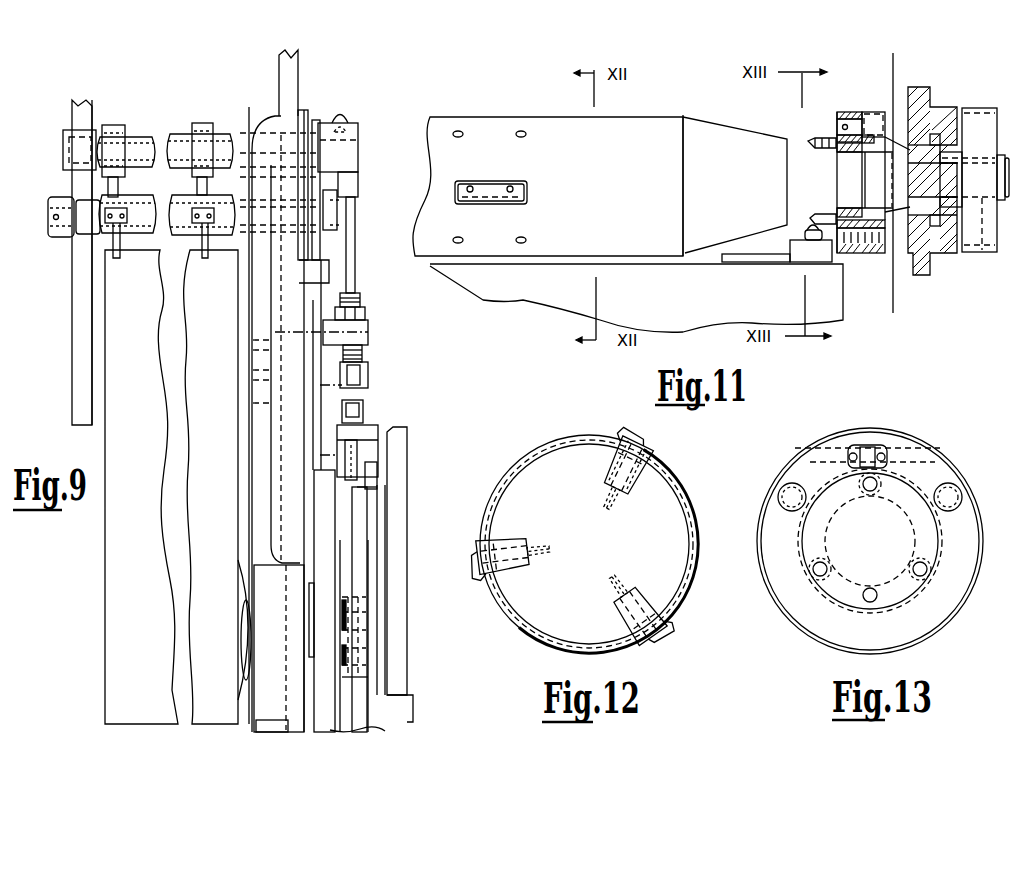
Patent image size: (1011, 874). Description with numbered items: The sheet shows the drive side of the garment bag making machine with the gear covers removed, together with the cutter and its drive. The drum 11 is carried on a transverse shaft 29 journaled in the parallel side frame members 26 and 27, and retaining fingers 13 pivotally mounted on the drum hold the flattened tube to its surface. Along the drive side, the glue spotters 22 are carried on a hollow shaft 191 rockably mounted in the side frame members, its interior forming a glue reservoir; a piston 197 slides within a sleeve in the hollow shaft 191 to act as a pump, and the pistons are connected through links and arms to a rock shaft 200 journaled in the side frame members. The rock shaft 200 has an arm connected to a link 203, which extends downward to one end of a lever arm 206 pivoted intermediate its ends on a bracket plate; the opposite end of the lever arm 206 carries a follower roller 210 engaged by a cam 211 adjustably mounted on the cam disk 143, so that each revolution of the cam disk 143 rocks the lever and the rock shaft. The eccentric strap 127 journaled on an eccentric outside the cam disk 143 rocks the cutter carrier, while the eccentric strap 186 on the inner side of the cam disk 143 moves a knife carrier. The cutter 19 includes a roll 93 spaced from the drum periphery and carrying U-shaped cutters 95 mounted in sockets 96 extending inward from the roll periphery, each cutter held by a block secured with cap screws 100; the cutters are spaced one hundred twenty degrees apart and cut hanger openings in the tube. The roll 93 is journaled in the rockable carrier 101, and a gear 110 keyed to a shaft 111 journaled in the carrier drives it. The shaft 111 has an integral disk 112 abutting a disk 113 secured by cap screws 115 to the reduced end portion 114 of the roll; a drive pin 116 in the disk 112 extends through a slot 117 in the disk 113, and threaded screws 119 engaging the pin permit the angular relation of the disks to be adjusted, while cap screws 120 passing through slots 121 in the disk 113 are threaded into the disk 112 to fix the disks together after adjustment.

In FIG. 9, the drum 11 is at (120, 577).
In FIG. 11, the drum 11 is at (845, 302).
In FIG. 11, the retaining fingers 13 is at (752, 254).
In FIG. 11, the cutter 19 is at (533, 123).
In FIG. 9, the glue spotters 22 is at (118, 259).
In FIG. 9, the side frame member 26 is at (268, 712).
In FIG. 9, the side frame member 27 is at (78, 372).
In FIG. 9, the transverse shaft 29 is at (238, 570).
In FIG. 11, the roll 93 is at (672, 117).
In FIG. 12, the roll 93 is at (663, 518).
In FIG. 11, the U-shaped cutters 95 is at (528, 197).
In FIG. 12, the sockets 96 is at (655, 462).
In FIG. 12, the cap screws 100 is at (628, 438).
In FIG. 11, the rockable carrier 101 is at (912, 87).
In FIG. 11, the gear 110 is at (973, 108).
In FIG. 11, the shaft 111 is at (982, 200).
In FIG. 11, the disk 112 is at (870, 112).
In FIG. 11, the disk 113 is at (845, 112).
In FIG. 13, the disk 113 is at (947, 622).
In FIG. 11, the reduced end portion 114 is at (815, 138).
In FIG. 11, the cap screws 115 is at (838, 160).
In FIG. 11, the drive pin 116 is at (864, 134).
In FIG. 13, the drive pin 116 is at (880, 452).
In FIG. 13, the slot 117 is at (865, 445).
In FIG. 13, the set screw 119 is at (833, 452).
In FIG. 13, the cap screws 120 is at (787, 490).
In FIG. 13, the slots 121 is at (782, 507).
In FIG. 9, the eccentric strap 127 is at (402, 516).
In FIG. 9, the cam disk 143 is at (368, 493).
In FIG. 9, the eccentric strap 186 is at (327, 720).
In FIG. 9, the hollow shaft 191 is at (142, 205).
In FIG. 9, the piston 197 is at (115, 127).
In FIG. 9, the rock shaft 200 is at (180, 140).
In FIG. 9, the link 203 is at (352, 250).
In FIG. 9, the lever arm 206 is at (358, 437).
In FIG. 9, the follower roller 210 is at (356, 478).
In FIG. 9, the cam 211 is at (355, 673).